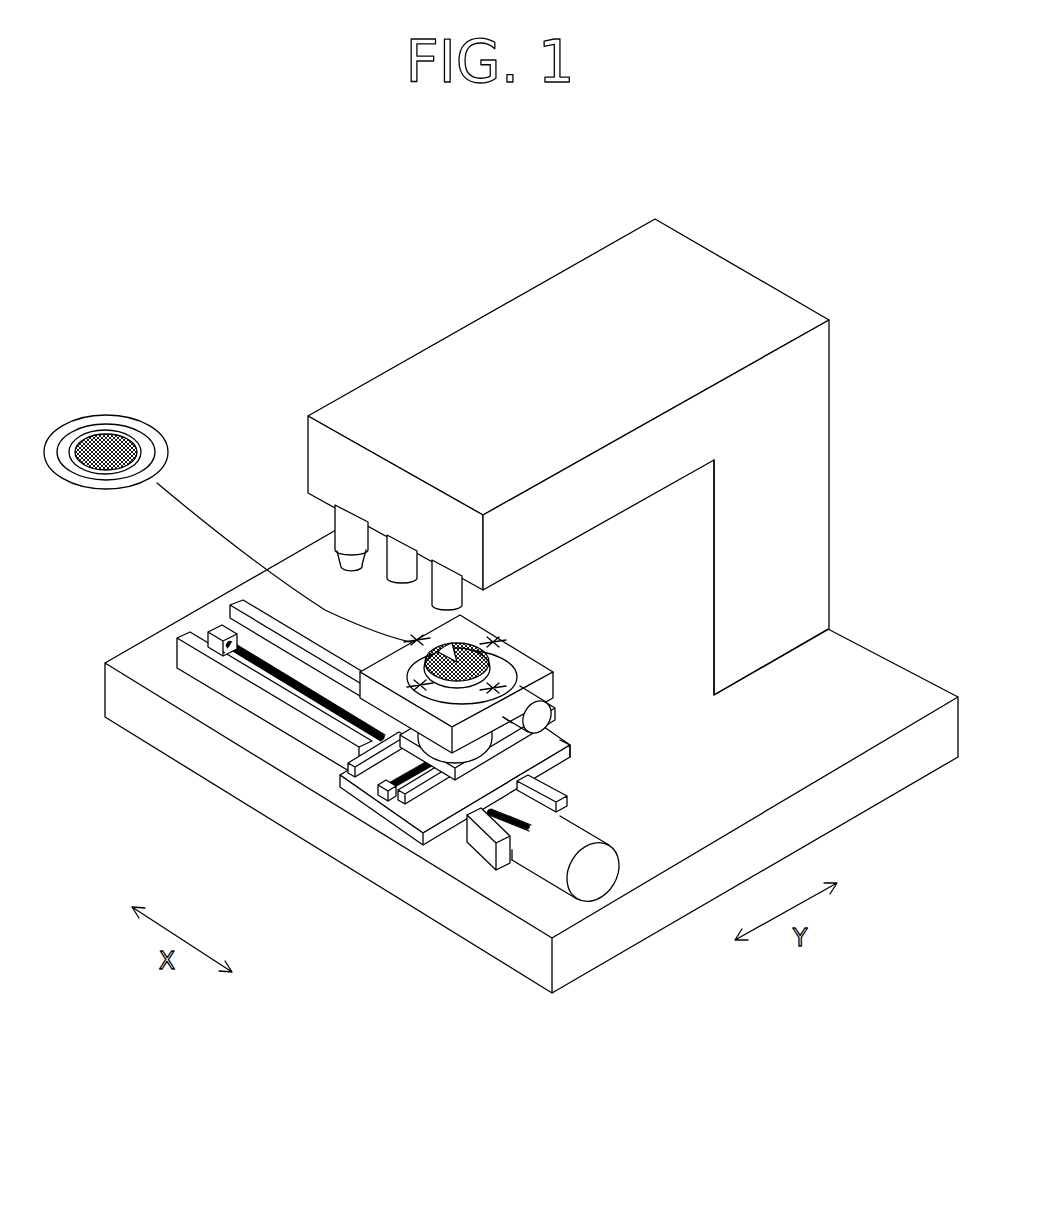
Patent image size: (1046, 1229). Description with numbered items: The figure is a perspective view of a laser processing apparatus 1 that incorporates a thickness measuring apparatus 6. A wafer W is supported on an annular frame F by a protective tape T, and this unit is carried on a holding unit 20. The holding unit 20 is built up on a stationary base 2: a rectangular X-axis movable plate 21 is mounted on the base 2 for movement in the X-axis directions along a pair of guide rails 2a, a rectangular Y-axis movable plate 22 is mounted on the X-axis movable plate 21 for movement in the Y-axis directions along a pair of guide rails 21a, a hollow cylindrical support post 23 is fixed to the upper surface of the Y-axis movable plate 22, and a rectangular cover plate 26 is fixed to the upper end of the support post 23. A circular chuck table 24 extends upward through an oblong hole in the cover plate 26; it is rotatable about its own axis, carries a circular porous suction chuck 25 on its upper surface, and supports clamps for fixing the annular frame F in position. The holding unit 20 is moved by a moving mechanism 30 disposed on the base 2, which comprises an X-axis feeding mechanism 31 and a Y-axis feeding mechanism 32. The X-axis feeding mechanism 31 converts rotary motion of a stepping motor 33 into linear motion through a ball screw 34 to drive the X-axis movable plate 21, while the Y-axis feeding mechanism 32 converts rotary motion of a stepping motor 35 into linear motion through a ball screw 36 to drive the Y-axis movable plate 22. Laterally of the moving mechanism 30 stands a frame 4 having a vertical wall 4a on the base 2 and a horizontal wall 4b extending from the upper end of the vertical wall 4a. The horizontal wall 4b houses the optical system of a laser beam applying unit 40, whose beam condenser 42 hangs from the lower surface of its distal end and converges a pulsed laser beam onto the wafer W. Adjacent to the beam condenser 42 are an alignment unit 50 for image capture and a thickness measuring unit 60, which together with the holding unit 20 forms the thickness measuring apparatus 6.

The laser processing apparatus 1 is at (218, 331).
The stationary base 2 is at (880, 680).
The guide rails 2a is at (243, 605).
The frame 4 is at (876, 513).
The vertical wall 4a is at (805, 428).
The horizontal wall 4b is at (662, 463).
The thickness measuring apparatus 6 is at (472, 607).
The holding unit 20 is at (152, 841).
The X-axis movable plate 21 is at (440, 838).
The guide rails 21a is at (345, 770).
The Y-axis movable plate 22 is at (466, 686).
The support post 23 is at (448, 760).
The chuck table 24 is at (412, 783).
The suction chuck 25 is at (385, 715).
The cover plate 26 is at (335, 710).
The moving mechanism 30 is at (684, 718).
The X-axis feeding mechanism 31 is at (634, 777).
The Y-axis feeding mechanism 32 is at (634, 703).
The stepping motor 33 is at (563, 837).
The ball screw 34 is at (562, 785).
The stepping motor 35 is at (545, 712).
The ball screw 36 is at (572, 752).
The laser beam applying unit 40 is at (326, 528).
The beam condenser 42 is at (352, 545).
The alignment unit 50 is at (397, 560).
The thickness measuring unit 60 is at (438, 580).
The wafer W is at (112, 433).
The protective tape T is at (135, 435).
The annular frame F is at (160, 452).